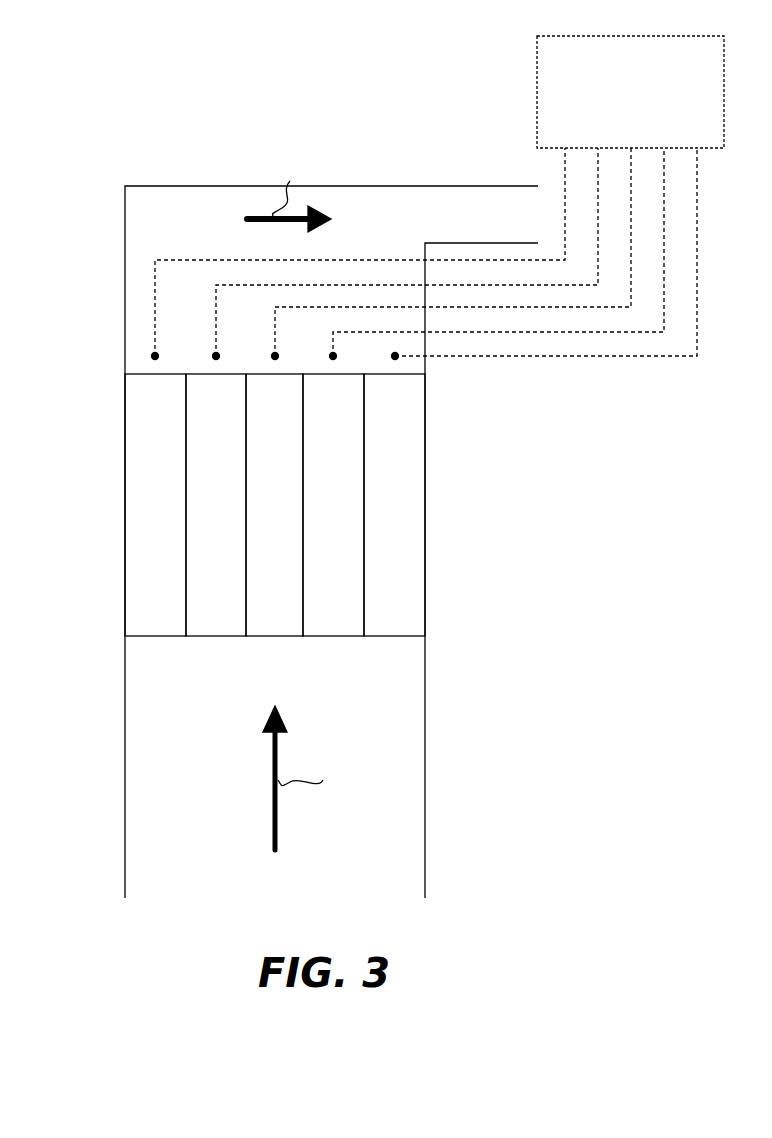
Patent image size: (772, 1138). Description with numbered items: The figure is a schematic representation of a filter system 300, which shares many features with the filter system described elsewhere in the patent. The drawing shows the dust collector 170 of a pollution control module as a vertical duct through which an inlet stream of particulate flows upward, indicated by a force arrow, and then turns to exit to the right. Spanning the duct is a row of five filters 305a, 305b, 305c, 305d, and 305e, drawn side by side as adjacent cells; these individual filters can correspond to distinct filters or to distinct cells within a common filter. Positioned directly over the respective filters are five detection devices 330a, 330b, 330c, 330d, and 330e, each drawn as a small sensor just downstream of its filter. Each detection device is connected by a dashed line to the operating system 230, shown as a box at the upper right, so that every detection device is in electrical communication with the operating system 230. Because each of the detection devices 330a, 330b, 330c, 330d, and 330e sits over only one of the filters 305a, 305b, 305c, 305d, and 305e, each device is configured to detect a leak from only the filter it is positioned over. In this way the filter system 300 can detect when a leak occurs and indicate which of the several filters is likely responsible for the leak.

The filter system 300 is at (112, 76).
The operating system 230 is at (630, 92).
The dust collector 170 is at (125, 665).
The filter 305a is at (155, 505).
The filter 305b is at (216, 505).
The filter 305c is at (274, 505).
The filter 305d is at (333, 505).
The filter 305e is at (394, 505).
The detection device 330a is at (155, 353).
The detection device 330b is at (216, 353).
The detection device 330c is at (275, 353).
The detection device 330d is at (333, 358).
The detection device 330e is at (395, 358).